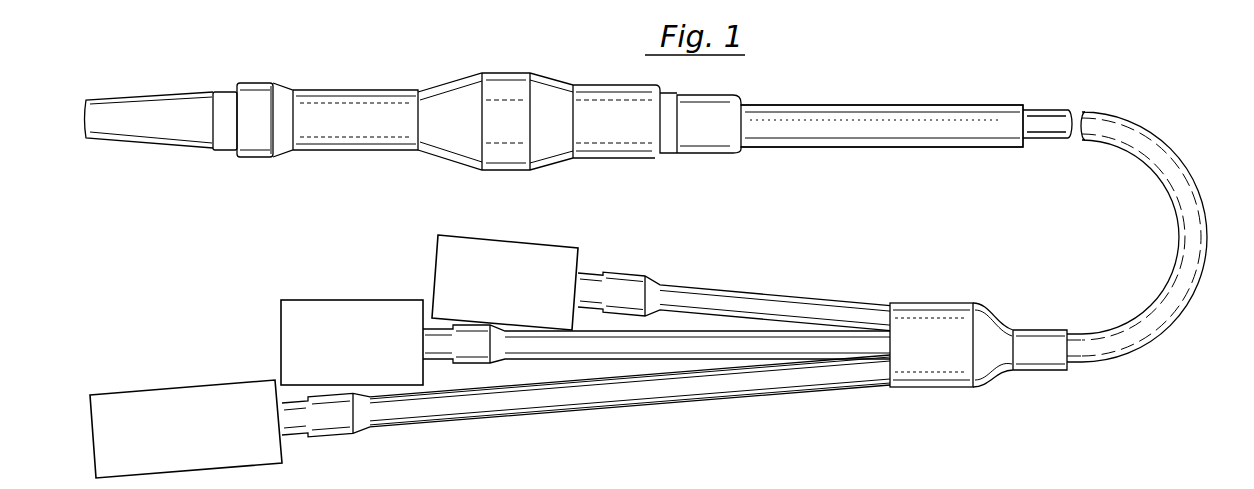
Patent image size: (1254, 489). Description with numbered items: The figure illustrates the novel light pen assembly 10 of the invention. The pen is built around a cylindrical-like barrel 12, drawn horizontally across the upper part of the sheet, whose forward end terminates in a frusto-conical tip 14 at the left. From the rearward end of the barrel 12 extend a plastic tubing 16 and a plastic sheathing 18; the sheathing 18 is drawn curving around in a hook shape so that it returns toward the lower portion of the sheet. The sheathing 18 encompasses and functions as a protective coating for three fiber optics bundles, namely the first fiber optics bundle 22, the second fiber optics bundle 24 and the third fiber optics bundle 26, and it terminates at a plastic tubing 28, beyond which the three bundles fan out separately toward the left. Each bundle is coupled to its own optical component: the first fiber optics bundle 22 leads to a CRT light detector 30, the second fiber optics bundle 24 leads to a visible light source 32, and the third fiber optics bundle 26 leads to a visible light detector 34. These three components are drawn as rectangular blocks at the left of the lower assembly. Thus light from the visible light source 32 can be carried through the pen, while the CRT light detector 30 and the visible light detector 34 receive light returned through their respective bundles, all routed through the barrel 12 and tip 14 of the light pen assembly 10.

The light pen assembly 10 is at (1100, 397).
The barrel 12 is at (320, 90).
The frusto-conical tip 14 is at (162, 144).
The plastic tubing 16 is at (937, 105).
The plastic sheathing 18 is at (1160, 183).
The first fiber optics bundle 22 is at (807, 298).
The second fiber optics bundle 24 is at (420, 423).
The third fiber optics bundle 26 is at (518, 360).
The plastic tubing 28 is at (975, 303).
The CRT light detector 30 is at (524, 243).
The visible light source 32 is at (208, 385).
The visible light detector 34 is at (328, 300).